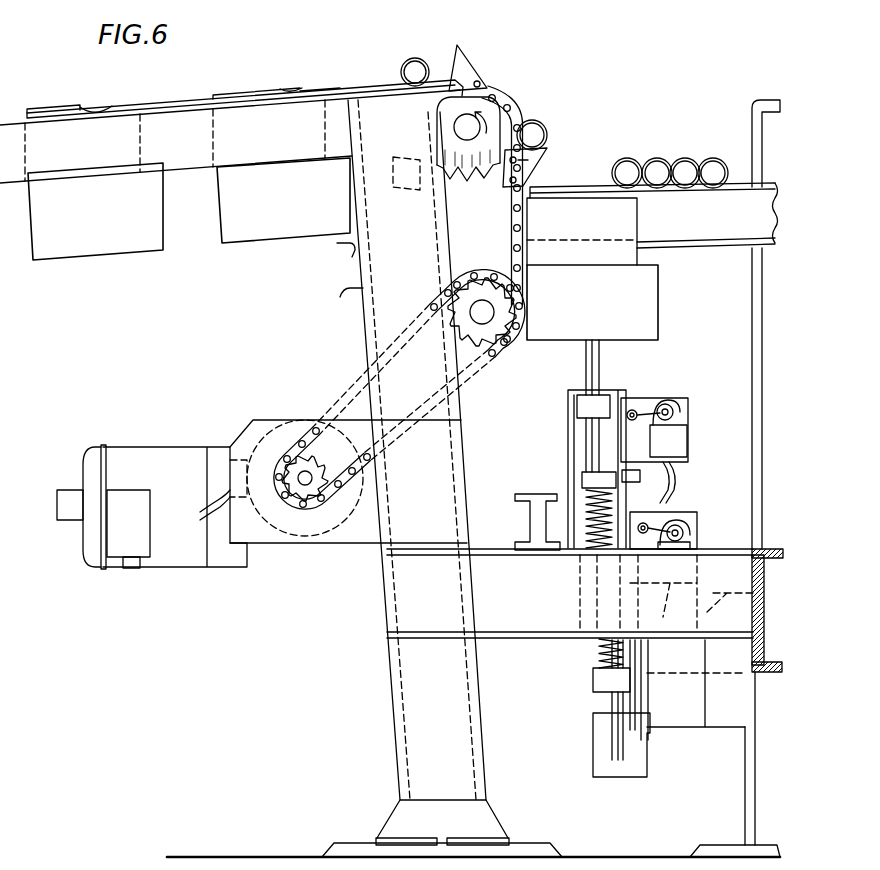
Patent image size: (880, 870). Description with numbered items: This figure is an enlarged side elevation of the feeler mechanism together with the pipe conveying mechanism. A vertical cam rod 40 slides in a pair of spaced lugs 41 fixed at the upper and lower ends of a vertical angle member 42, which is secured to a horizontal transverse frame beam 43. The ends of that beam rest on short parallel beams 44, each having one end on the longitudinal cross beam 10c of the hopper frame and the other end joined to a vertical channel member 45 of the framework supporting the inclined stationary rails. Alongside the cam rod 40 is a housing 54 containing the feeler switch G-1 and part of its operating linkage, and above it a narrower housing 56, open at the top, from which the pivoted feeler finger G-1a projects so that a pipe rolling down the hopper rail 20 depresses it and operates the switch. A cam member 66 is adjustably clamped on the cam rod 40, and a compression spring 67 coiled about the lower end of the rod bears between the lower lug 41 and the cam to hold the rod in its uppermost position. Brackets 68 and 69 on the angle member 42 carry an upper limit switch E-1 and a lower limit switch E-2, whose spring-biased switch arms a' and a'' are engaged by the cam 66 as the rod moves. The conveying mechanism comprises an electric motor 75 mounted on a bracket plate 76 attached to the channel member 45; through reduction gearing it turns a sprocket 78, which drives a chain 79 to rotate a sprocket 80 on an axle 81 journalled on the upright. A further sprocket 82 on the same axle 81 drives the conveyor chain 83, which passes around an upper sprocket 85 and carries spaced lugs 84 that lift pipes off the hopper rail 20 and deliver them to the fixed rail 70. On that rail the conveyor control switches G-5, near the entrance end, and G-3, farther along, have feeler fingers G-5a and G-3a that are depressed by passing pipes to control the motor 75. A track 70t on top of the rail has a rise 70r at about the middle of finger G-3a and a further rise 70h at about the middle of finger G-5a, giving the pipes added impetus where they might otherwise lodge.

The fixed rail 70 is at (188, 154).
The feeler finger G-3a is at (48, 113).
The rise 70r is at (110, 112).
The feeler finger G-5a is at (227, 96).
The further rise 70h is at (300, 91).
The track 70t is at (378, 83).
The lug 84 is at (473, 63).
The conveyor chain 83 is at (500, 98).
The upper sprocket 85 is at (500, 117).
The feeler finger G-1a is at (548, 185).
The narrower housing 56 is at (620, 233).
The hopper rail 20 is at (713, 234).
The conveyor control switch G-3 is at (118, 224).
The conveyor control switch G-5 is at (293, 207).
The feeler switch G-1 is at (612, 307).
The housing 54 is at (728, 324).
The sprocket 82 is at (481, 268).
The sprocket 80 is at (460, 302).
The axle 81 is at (485, 318).
The chain 79 is at (342, 398).
The sprocket 78 is at (320, 455).
The bracket plate 76 is at (247, 428).
The electric motor 75 is at (90, 530).
The cam rod 40 is at (592, 370).
The lug 41 is at (578, 408).
The bracket 68 is at (680, 396).
The upper limit switch E-1 is at (688, 427).
The switch arm a' is at (651, 395).
The transverse frame beam 43 is at (527, 494).
The cam member 66 is at (633, 480).
The switch arm a'' is at (660, 517).
The bracket 69 is at (693, 513).
The lower limit switch E-2 is at (692, 543).
The longitudinal cross beam 10c is at (765, 622).
The short parallel beam 44 is at (510, 622).
The compression spring 67 is at (593, 650).
The vertical angle member 42 is at (597, 702).
The vertical channel member 45 is at (407, 705).